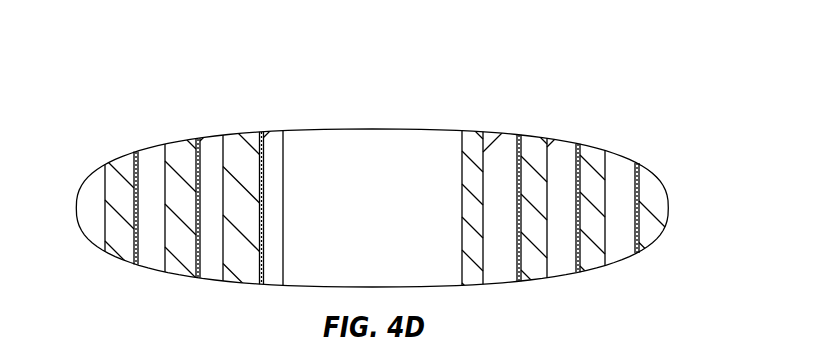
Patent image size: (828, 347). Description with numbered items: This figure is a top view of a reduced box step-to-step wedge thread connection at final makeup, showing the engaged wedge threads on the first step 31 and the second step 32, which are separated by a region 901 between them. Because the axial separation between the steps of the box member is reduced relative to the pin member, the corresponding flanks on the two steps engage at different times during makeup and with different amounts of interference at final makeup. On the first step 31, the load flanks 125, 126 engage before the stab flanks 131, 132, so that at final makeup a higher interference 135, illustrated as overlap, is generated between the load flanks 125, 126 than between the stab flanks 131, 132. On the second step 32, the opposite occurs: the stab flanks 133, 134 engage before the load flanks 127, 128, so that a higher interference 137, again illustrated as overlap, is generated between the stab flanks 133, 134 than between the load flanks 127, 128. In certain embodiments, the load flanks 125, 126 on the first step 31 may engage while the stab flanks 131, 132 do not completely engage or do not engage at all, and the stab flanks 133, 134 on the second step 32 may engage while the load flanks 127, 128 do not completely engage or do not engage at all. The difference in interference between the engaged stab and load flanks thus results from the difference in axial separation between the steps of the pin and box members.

The first step 31 is at (298, 90).
The second step 32 is at (682, 90).
The central region 901 is at (447, 118).
The load flank 125 is at (140, 177).
The load flank 126 is at (143, 176).
The load flank 127 is at (552, 170).
The load flank 128 is at (548, 177).
The stab flank 131 is at (157, 172).
The stab flank 132 is at (168, 168).
The stab flank 133 is at (520, 163).
The stab flank 134 is at (545, 157).
The higher interference 135 is at (261, 284).
The higher interference 137 is at (519, 283).